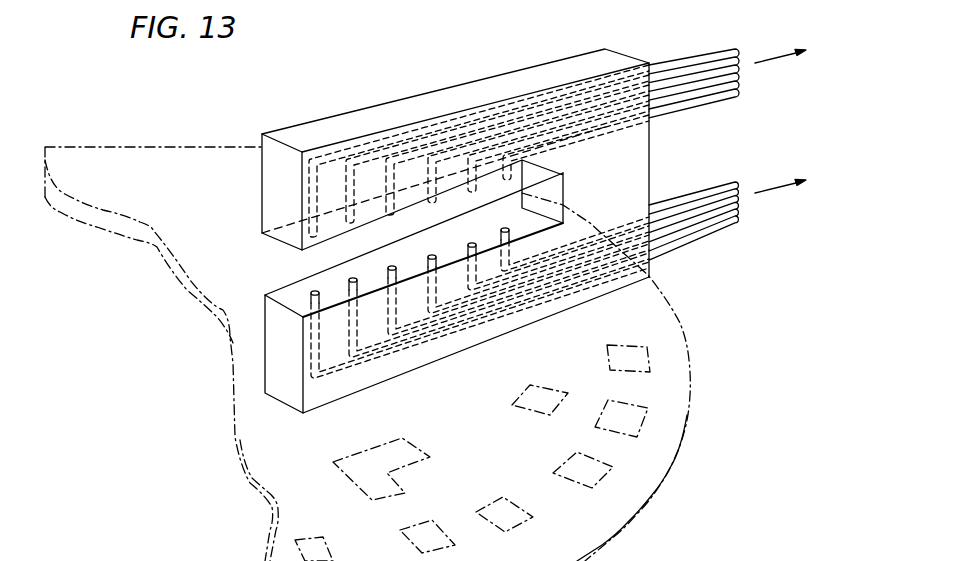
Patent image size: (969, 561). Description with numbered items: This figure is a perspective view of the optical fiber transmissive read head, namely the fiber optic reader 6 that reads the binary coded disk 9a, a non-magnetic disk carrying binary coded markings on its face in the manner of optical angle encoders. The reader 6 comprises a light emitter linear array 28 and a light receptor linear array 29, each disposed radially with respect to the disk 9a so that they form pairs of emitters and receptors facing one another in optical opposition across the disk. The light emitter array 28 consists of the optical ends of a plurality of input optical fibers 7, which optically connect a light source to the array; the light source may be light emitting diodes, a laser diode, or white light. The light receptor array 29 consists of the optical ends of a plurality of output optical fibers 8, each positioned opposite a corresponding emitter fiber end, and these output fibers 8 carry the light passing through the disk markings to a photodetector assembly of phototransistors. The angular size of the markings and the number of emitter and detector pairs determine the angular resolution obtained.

The fiber optic reader 6 is at (545, 67).
The input optical fibers 7 is at (686, 70).
The output optical fibers 8 is at (690, 232).
The binary coded disk 9a is at (176, 162).
The light emitter linear array 28 is at (509, 54).
The light receptor linear array 29 is at (537, 338).